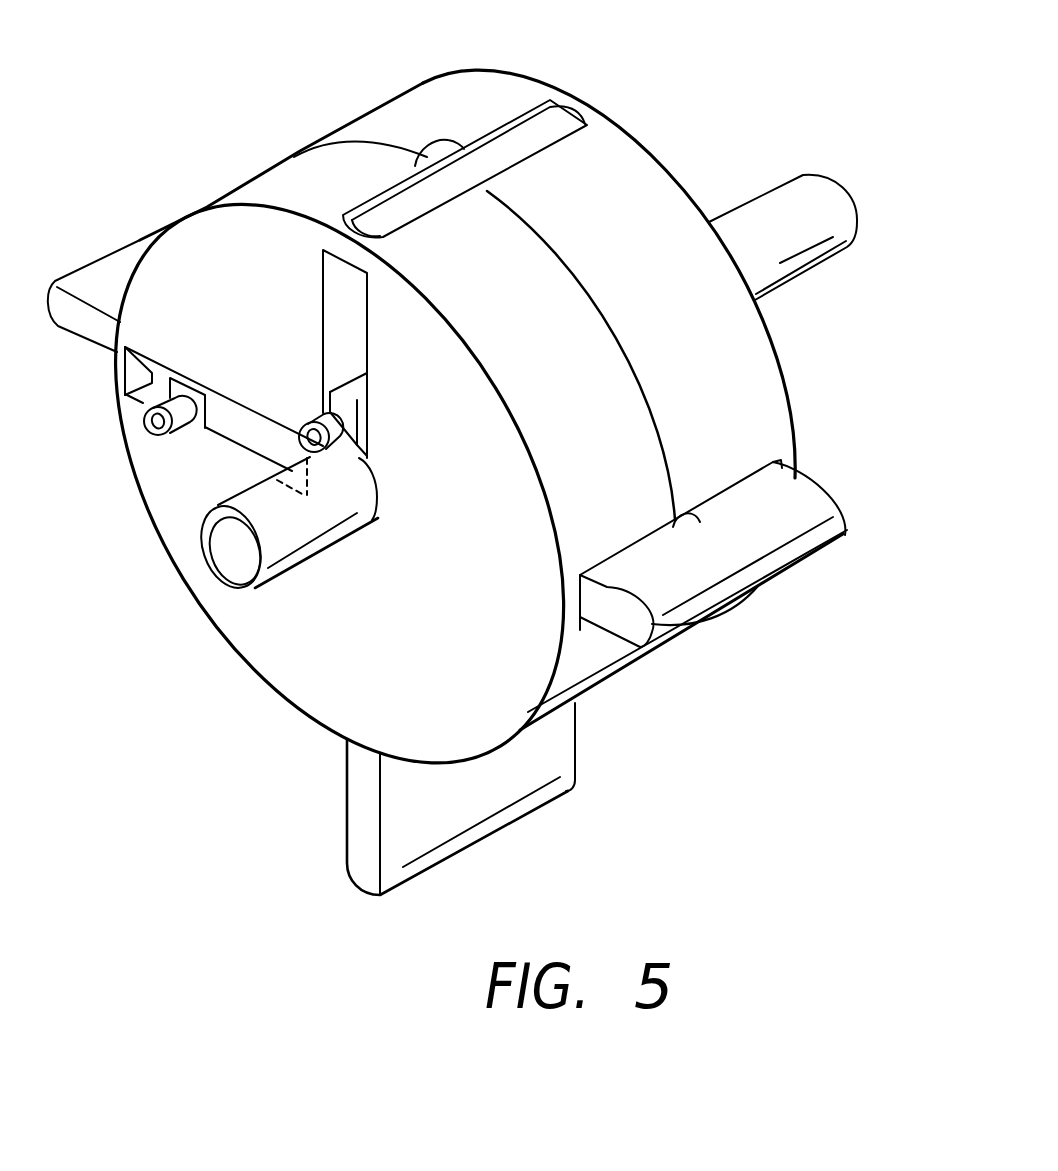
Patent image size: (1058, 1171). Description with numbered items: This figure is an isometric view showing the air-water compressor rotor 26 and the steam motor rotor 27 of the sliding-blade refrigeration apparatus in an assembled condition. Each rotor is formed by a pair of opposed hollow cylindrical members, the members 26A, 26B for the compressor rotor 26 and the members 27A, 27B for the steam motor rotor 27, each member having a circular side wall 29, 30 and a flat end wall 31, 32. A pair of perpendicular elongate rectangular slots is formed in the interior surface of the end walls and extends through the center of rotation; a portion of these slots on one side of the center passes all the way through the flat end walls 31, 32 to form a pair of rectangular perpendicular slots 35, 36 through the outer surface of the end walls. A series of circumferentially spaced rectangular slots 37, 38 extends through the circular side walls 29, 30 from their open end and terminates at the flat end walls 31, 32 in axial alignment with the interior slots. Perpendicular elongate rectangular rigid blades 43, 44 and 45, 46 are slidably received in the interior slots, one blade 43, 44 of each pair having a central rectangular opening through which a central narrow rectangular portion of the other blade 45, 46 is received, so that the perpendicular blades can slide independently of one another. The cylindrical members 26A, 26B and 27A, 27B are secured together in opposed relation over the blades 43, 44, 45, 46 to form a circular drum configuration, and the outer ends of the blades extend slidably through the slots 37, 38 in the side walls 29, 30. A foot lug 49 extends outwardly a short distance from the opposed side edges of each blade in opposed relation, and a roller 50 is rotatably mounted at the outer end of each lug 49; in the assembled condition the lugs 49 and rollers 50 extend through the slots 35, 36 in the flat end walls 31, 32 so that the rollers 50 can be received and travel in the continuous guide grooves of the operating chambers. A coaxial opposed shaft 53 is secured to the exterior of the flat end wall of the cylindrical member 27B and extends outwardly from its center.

The air-water compressor rotor 26 is at (409, 428).
The steam motor rotor 27 is at (409, 428).
The hollow cylindrical member 26A is at (340, 462).
The hollow cylindrical member 27A is at (290, 187).
The hollow cylindrical member 26B is at (544, 320).
The hollow cylindrical member 27B is at (510, 103).
The circular side wall 29 is at (681, 634).
The circular side wall 30 is at (700, 620).
The end wall 31 is at (455, 420).
The end wall 32 is at (707, 210).
The rectangular perpendicular slot 35 is at (231, 402).
The rectangular perpendicular slot 36 is at (338, 340).
The rectangular slot 37 is at (506, 365).
The rectangular slot 38 is at (414, 164).
The rigid blade 43 is at (461, 803).
The rigid blade 44 is at (440, 827).
The rigid blade 45 is at (730, 575).
The rigid blade 46 is at (800, 500).
The foot lug 49 is at (355, 391).
The roller 50 is at (340, 426).
The coaxial opposed shaft 53 is at (293, 533).